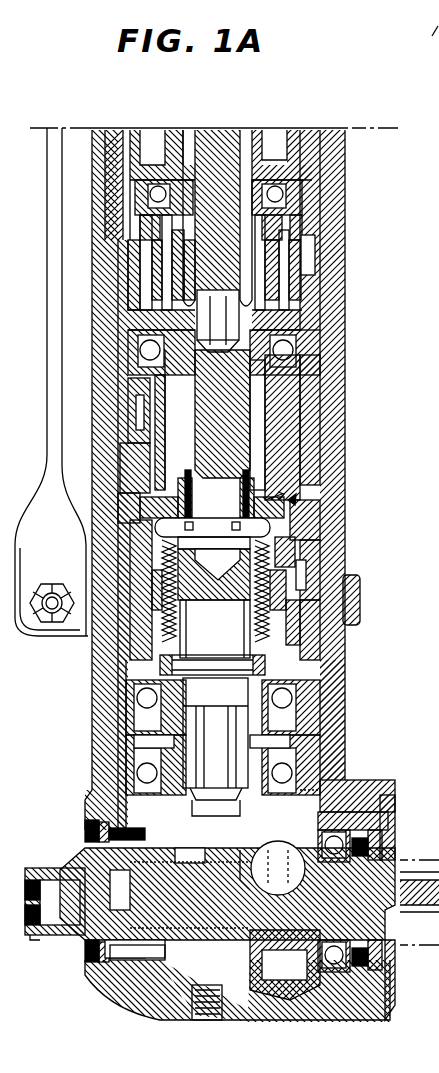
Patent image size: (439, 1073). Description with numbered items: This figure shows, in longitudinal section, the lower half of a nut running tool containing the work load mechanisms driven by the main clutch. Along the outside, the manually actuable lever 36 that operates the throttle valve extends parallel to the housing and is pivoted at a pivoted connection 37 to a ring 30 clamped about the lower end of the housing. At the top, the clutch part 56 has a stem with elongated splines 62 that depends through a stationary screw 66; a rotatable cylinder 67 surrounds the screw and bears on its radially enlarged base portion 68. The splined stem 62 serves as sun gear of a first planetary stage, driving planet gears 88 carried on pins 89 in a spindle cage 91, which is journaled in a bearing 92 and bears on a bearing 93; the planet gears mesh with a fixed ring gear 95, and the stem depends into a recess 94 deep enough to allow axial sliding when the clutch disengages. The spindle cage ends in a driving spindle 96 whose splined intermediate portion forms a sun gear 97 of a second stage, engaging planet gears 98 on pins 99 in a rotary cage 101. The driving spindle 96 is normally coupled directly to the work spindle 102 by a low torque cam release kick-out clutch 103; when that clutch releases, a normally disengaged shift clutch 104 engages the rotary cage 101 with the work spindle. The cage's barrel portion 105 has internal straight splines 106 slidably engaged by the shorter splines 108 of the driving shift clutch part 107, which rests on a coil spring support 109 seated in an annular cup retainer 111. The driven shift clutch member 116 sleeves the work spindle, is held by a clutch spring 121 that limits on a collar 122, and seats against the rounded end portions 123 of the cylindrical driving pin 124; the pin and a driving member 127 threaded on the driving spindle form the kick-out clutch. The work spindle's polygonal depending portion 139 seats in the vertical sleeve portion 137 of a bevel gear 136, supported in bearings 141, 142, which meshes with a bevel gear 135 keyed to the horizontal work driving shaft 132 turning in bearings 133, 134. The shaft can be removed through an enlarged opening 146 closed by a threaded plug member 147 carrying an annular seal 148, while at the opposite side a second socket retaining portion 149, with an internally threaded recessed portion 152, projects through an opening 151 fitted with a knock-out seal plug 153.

The ring 30 is at (360, 598).
The lever 36 is at (47, 172).
The pivoted connection 37 is at (44, 580).
The clutch part 56 is at (210, 132).
The splined stem 62 is at (225, 185).
The stationary screw 66 is at (272, 160).
The rotatable cylinder 67 is at (313, 148).
The base portion 68 is at (286, 165).
The planet gears 88 is at (150, 263).
The pins 89 is at (268, 266).
The spindle cage 91 is at (292, 224).
The bearing 92 is at (300, 189).
The bearing 93 is at (312, 345).
The recess 94 is at (236, 320).
The fixed ring gear 95 is at (140, 298).
The driving spindle 96 is at (226, 403).
The sun gear 97 is at (240, 430).
The planet gears 98 is at (122, 428).
The pins 99 is at (152, 393).
The rotary cage 101 is at (300, 402).
The work spindle 102 is at (226, 639).
The kick-out clutch 103 is at (296, 498).
The shift clutch 104 is at (128, 550).
The barrel portion 105 is at (325, 573).
The internal straight splines 106 is at (298, 612).
The driving shift clutch part 107 is at (322, 560).
The splines 108 is at (104, 648).
The coil spring support 109 is at (295, 645).
The cup retainer 111 is at (116, 682).
The driven shift clutch member 116 is at (290, 535).
The clutch spring 121 is at (219, 578).
The collar 122 is at (218, 675).
The rounded end portions 123 is at (219, 578).
The driving pin 124 is at (212, 539).
The driving member 127 is at (224, 478).
The work driving shaft 132 is at (332, 901).
The bearing 133 is at (385, 812).
The bearing 134 is at (142, 890).
The bevel gear 135 is at (298, 1022).
The bevel gear 136 is at (232, 873).
The sleeve portion 137 is at (295, 727).
The polygonal depending portion 139 is at (240, 752).
The upper bearing 141 is at (145, 702).
The bearing 142 is at (143, 770).
The enlarged opening 146 is at (394, 780).
The plug member 147 is at (392, 1022).
The annular seal 148 is at (386, 843).
The second socket retaining portion 149 is at (55, 935).
The opening 151 is at (85, 826).
The internally threaded recessed portion 152 is at (188, 940).
The knock-out seal plug 153 is at (90, 975).